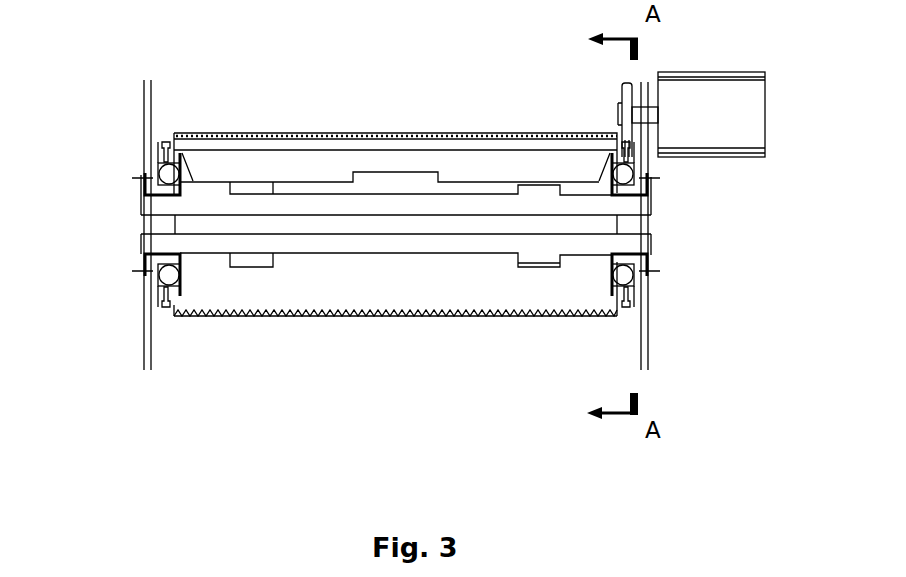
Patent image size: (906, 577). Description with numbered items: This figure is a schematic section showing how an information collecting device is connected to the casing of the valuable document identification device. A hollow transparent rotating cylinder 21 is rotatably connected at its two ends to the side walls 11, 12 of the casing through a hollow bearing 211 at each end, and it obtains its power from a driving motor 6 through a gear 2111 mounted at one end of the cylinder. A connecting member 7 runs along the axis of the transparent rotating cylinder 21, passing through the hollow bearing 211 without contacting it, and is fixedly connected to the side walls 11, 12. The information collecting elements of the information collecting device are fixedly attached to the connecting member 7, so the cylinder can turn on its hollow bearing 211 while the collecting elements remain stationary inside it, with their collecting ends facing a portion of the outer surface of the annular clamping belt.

The driving motor 6 is at (693, 122).
The connecting member 7 is at (300, 268).
The side wall 11 is at (147, 345).
The side wall 12 is at (645, 343).
The transparent rotating cylinder 21 is at (210, 133).
The hollow bearing 211 is at (160, 170).
The gear 2111 is at (628, 103).